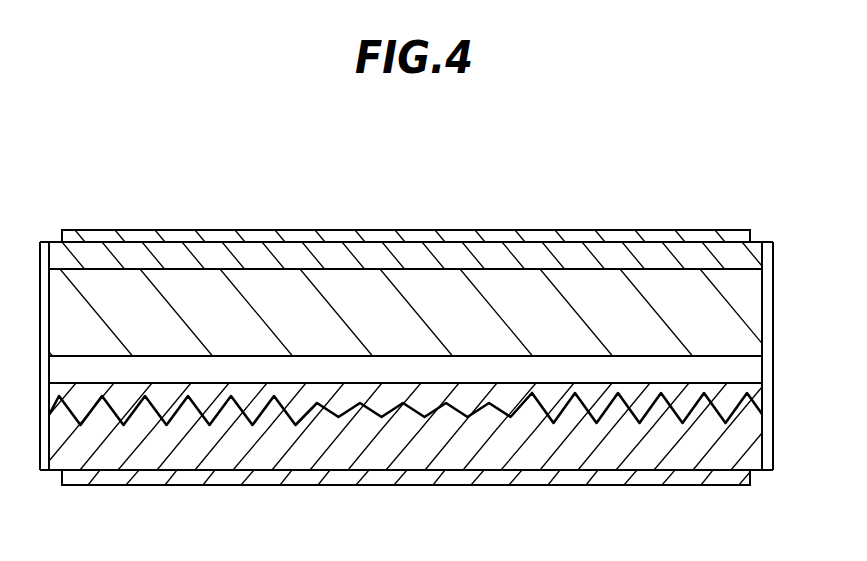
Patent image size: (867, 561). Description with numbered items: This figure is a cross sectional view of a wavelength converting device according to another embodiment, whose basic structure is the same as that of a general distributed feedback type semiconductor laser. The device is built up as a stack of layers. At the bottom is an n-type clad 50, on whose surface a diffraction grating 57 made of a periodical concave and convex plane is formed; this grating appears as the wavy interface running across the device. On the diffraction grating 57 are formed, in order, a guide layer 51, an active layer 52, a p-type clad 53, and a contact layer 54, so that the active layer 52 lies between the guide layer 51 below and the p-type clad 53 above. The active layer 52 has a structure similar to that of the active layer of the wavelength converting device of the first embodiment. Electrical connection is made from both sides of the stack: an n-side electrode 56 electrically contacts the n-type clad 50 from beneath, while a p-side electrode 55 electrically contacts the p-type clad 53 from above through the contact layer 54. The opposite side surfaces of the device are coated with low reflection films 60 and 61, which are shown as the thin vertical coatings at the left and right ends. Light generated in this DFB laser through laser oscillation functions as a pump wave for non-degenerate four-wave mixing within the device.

The n-type clad 50 is at (757, 450).
The guide layer 51 is at (757, 402).
The active layer 52 is at (770, 364).
The p-type clad 53 is at (757, 307).
The contact layer 54 is at (757, 257).
The p-side electrode 55 is at (665, 230).
The n-side electrode 56 is at (643, 485).
The diffraction grating 57 is at (379, 419).
The low reflection film 60 is at (45, 470).
The low reflection film 61 is at (768, 470).